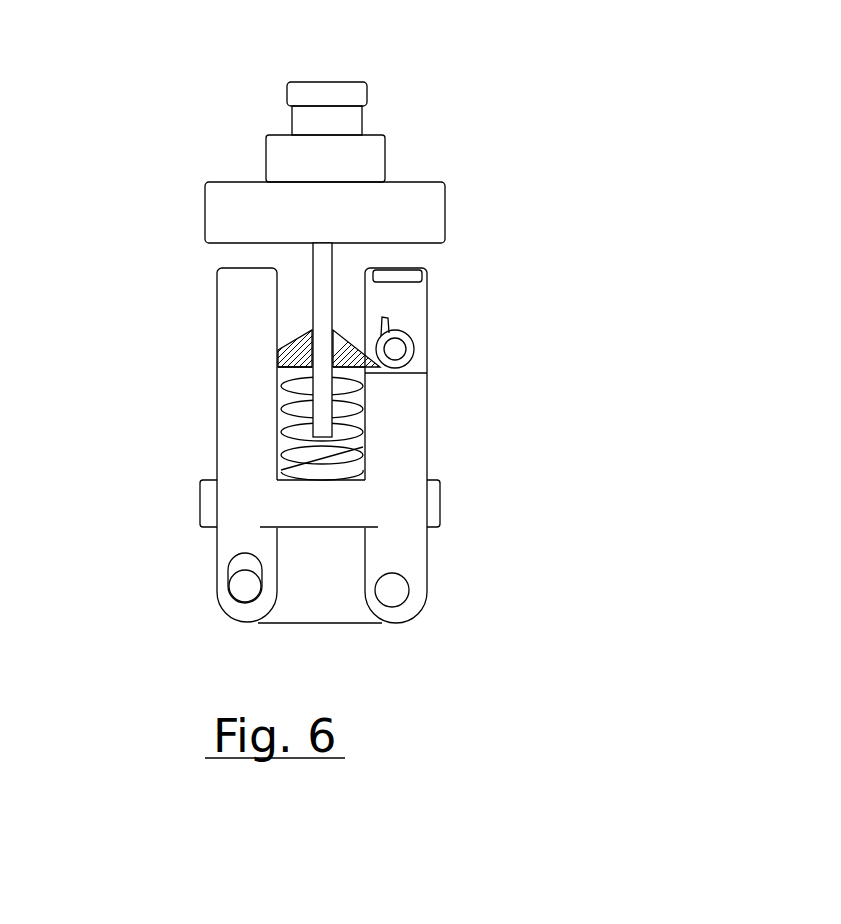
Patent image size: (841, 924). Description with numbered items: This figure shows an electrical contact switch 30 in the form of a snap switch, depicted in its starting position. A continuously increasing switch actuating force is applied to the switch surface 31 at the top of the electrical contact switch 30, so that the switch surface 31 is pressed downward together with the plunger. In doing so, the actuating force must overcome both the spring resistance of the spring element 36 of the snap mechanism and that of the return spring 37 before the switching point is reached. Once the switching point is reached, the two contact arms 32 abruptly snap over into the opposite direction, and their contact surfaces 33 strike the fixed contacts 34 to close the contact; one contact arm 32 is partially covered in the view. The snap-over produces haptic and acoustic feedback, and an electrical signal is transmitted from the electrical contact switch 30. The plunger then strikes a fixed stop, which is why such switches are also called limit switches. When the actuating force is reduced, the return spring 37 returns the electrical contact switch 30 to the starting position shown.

The electrical contact switch 30 is at (142, 170).
The switch surface 31 is at (332, 80).
The contact arms 32 is at (285, 352).
The contact surfaces 33 is at (414, 333).
The fixed contacts 34 is at (397, 282).
The spring element 36 is at (312, 332).
The return spring 37 is at (365, 448).